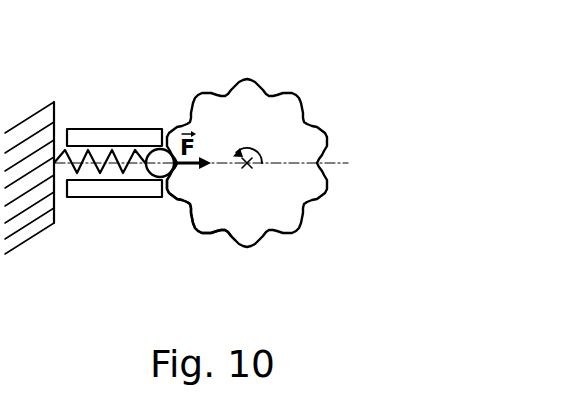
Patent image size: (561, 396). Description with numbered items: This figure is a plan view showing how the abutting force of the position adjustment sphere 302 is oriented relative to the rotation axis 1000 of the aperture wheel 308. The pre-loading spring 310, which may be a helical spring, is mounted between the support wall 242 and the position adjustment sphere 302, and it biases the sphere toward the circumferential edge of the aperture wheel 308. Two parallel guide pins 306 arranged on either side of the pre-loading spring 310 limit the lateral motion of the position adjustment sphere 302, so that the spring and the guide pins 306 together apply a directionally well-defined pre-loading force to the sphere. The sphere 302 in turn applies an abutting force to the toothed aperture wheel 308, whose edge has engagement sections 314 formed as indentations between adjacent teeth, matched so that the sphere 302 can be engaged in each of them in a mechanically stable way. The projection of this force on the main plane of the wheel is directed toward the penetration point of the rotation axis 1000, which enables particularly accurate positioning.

The support wall 242 is at (28, 212).
The guide pins 306 is at (112, 137).
The pre-loading spring 310 is at (92, 170).
The position adjustment sphere 302 is at (159, 157).
The aperture wheel 308 is at (233, 117).
The engagement sections 314 is at (188, 205).
The rotation axis 1000 is at (247, 165).